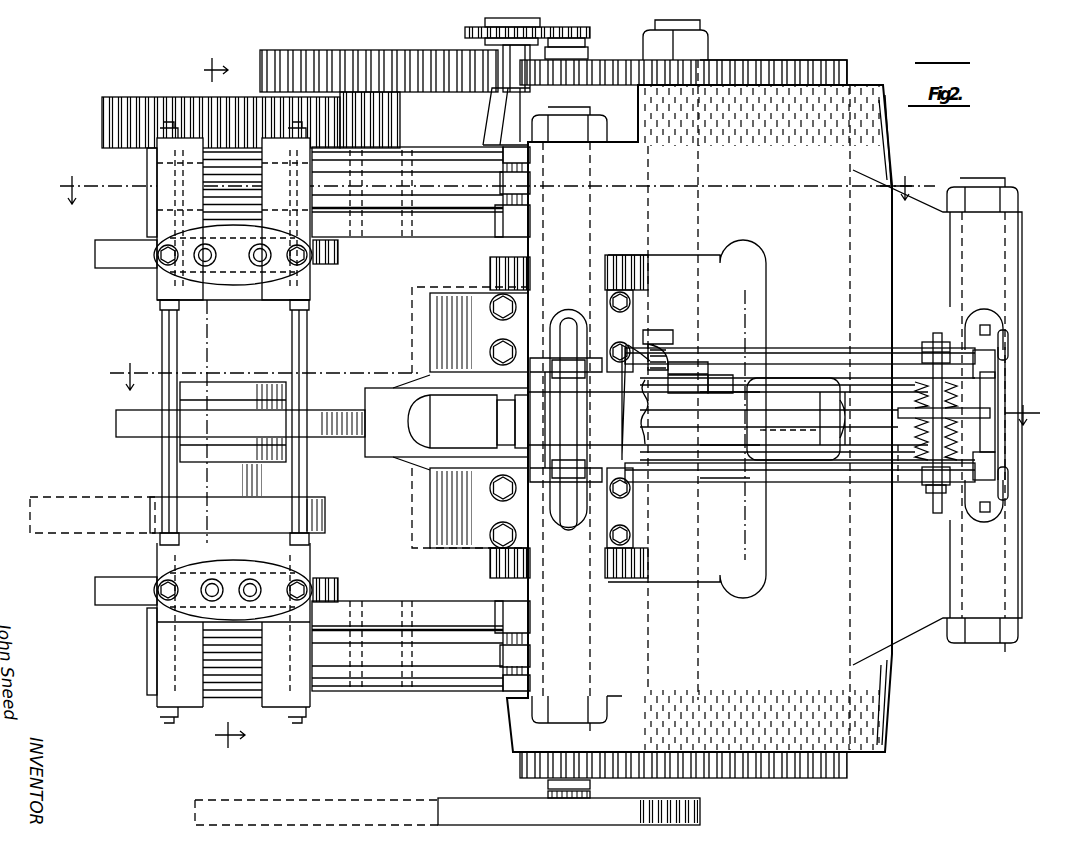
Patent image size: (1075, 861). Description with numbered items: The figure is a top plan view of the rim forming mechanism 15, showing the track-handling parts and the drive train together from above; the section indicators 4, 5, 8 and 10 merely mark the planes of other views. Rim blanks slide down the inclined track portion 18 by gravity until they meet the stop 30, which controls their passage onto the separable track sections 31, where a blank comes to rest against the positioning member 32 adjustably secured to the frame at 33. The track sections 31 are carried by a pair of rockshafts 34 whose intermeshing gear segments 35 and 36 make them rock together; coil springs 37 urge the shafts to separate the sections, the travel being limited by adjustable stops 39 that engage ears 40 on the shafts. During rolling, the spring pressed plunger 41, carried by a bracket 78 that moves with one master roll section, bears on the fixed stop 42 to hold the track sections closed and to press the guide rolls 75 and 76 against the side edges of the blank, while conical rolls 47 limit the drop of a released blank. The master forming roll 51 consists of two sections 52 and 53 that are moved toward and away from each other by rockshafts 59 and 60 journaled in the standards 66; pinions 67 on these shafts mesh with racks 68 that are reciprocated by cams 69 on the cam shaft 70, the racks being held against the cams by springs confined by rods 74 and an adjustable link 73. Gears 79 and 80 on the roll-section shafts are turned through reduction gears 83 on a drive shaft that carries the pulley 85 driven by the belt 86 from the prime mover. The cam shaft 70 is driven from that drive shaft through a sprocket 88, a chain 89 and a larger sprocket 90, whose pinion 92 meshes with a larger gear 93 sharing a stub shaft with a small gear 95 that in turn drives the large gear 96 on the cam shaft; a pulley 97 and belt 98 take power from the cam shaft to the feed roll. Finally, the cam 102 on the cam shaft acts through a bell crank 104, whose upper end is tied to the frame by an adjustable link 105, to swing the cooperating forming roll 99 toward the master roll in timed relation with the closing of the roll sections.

The section line 4- 4 is at (570, 394).
The section line 5- 5 is at (224, 397).
The section line 8- 8 is at (486, 188).
The annular ring 10 is at (739, 294).
The rim forming mechanism 15 is at (138, 669).
The elevated portion of track 18 is at (728, 60).
The stop 30 is at (650, 470).
The track sections 31 is at (832, 400).
The positioning member 32 is at (975, 410).
The fixed part of frame 33 is at (990, 440).
The rockshafts 34 is at (800, 348).
The gear segment 35 is at (935, 342).
The gear segment 36 is at (940, 513).
The coil springs 37 is at (915, 432).
The adjustable stops 39 is at (1008, 345).
The ears 40 is at (1003, 332).
The spring pressed plunger 41 is at (656, 345).
The fixed stop 42 is at (690, 375).
The conical rolls 47 is at (900, 485).
The master forming roll 51 is at (772, 398).
The master roll section 52 is at (810, 400).
The master roll section 53 is at (780, 440).
The rockshaft 59 is at (450, 208).
The rockshaft 60 is at (430, 672).
The standards 66 is at (312, 290).
The pinions 67 is at (222, 150).
The racks 68 is at (150, 628).
The cams 69 is at (340, 255).
The cam shaft 70 is at (245, 348).
The link 73 is at (168, 283).
The rods 74 is at (200, 262).
The guide roll 75 is at (720, 478).
The guide roll 76 is at (715, 375).
The bracket 78 is at (688, 362).
The gear 79 is at (820, 60).
The gear 80 is at (847, 770).
The reduction gears 83 is at (617, 60).
The pulley 85 is at (462, 805).
The belt 86 is at (343, 800).
The sprocket 88 is at (565, 38).
The chain 89 is at (528, 45).
The sprocket 90 is at (465, 30).
The pinion 92 is at (513, 72).
The gear 93 is at (371, 50).
The gear 95 is at (398, 115).
The gear 96 is at (128, 97).
The pulley 97 is at (326, 505).
The belt 98 is at (104, 497).
The forming roll 99 is at (705, 425).
The cam 102 is at (336, 437).
The bell crank 104 is at (386, 430).
The adjustable link 105 is at (470, 425).